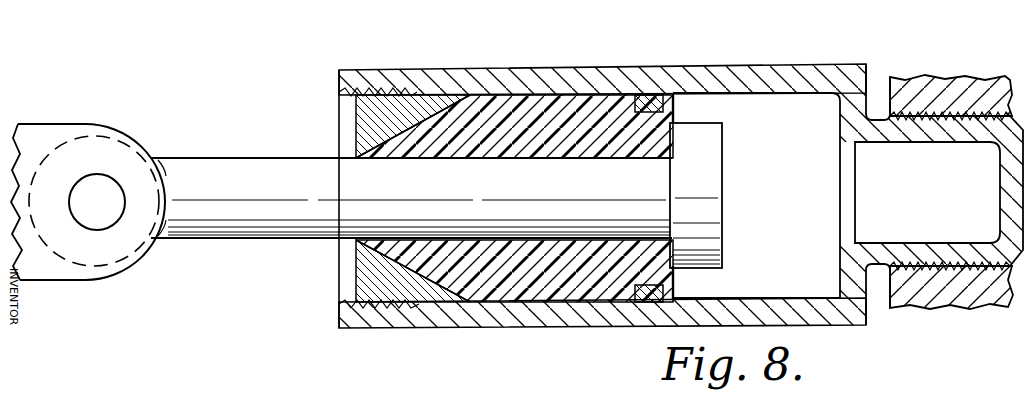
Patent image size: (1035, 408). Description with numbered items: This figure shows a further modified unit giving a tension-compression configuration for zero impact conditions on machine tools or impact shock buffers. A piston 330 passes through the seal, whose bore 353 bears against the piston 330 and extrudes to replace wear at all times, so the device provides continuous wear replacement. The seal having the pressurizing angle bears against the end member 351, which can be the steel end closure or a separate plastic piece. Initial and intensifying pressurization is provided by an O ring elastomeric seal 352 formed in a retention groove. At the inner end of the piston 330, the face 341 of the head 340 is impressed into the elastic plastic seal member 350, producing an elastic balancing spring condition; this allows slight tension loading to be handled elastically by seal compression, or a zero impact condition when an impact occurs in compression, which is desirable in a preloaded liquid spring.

The piston 330 is at (227, 226).
The head 340 is at (723, 215).
The face 341 is at (672, 166).
The elastic plastic seal member 350 is at (568, 104).
The end member 351 is at (366, 118).
The O ring elastomeric seal 352 is at (648, 100).
The bore 353 is at (440, 160).